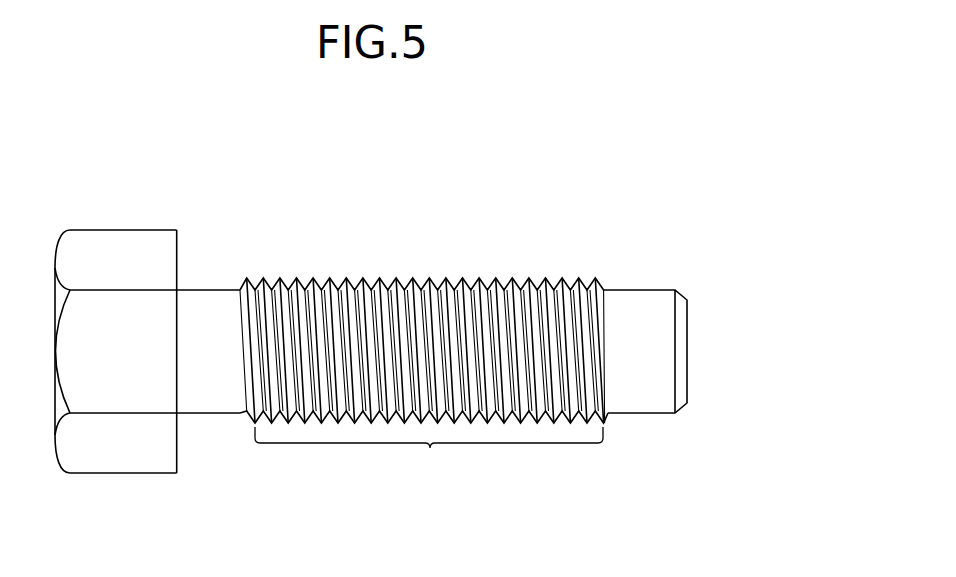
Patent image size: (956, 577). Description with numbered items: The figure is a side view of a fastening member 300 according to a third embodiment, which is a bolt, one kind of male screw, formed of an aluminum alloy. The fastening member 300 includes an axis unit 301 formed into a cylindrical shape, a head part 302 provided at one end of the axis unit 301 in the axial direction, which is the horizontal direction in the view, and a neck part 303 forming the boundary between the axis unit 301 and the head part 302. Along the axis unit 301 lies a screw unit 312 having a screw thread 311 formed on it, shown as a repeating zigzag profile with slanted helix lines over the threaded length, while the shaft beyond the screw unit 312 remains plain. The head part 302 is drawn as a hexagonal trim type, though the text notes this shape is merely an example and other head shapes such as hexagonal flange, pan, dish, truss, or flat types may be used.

The fastening member 300 is at (586, 174).
The axis unit 301 is at (458, 280).
The head part 302 is at (88, 247).
The neck part 303 is at (178, 287).
The screw thread 311 is at (562, 279).
The screw unit 312 is at (429, 454).